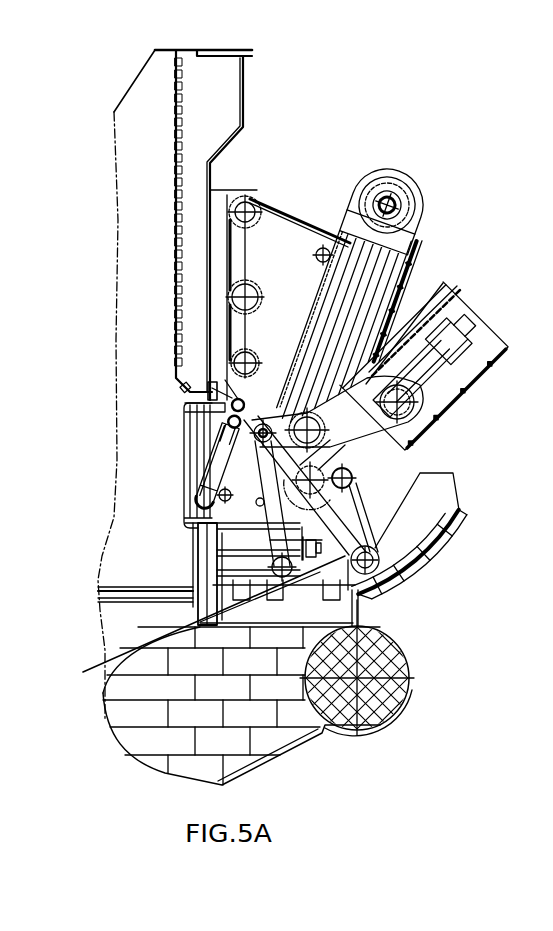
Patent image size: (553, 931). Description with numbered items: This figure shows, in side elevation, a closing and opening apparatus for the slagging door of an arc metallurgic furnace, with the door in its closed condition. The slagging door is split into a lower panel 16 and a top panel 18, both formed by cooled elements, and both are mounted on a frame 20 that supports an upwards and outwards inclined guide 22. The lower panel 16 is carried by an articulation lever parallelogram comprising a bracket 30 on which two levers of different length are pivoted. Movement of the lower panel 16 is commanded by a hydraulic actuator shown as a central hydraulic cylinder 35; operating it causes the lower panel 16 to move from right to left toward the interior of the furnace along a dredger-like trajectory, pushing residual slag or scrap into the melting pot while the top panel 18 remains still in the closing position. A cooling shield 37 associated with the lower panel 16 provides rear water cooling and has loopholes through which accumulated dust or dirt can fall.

The lower panel 16 is at (197, 570).
The top panel 18 is at (212, 465).
The frame 20 is at (294, 262).
The inclined guide 22 is at (421, 243).
The bracket 30 is at (203, 628).
The central hydraulic cylinder 35 is at (467, 345).
The cooling shield 37 is at (426, 560).